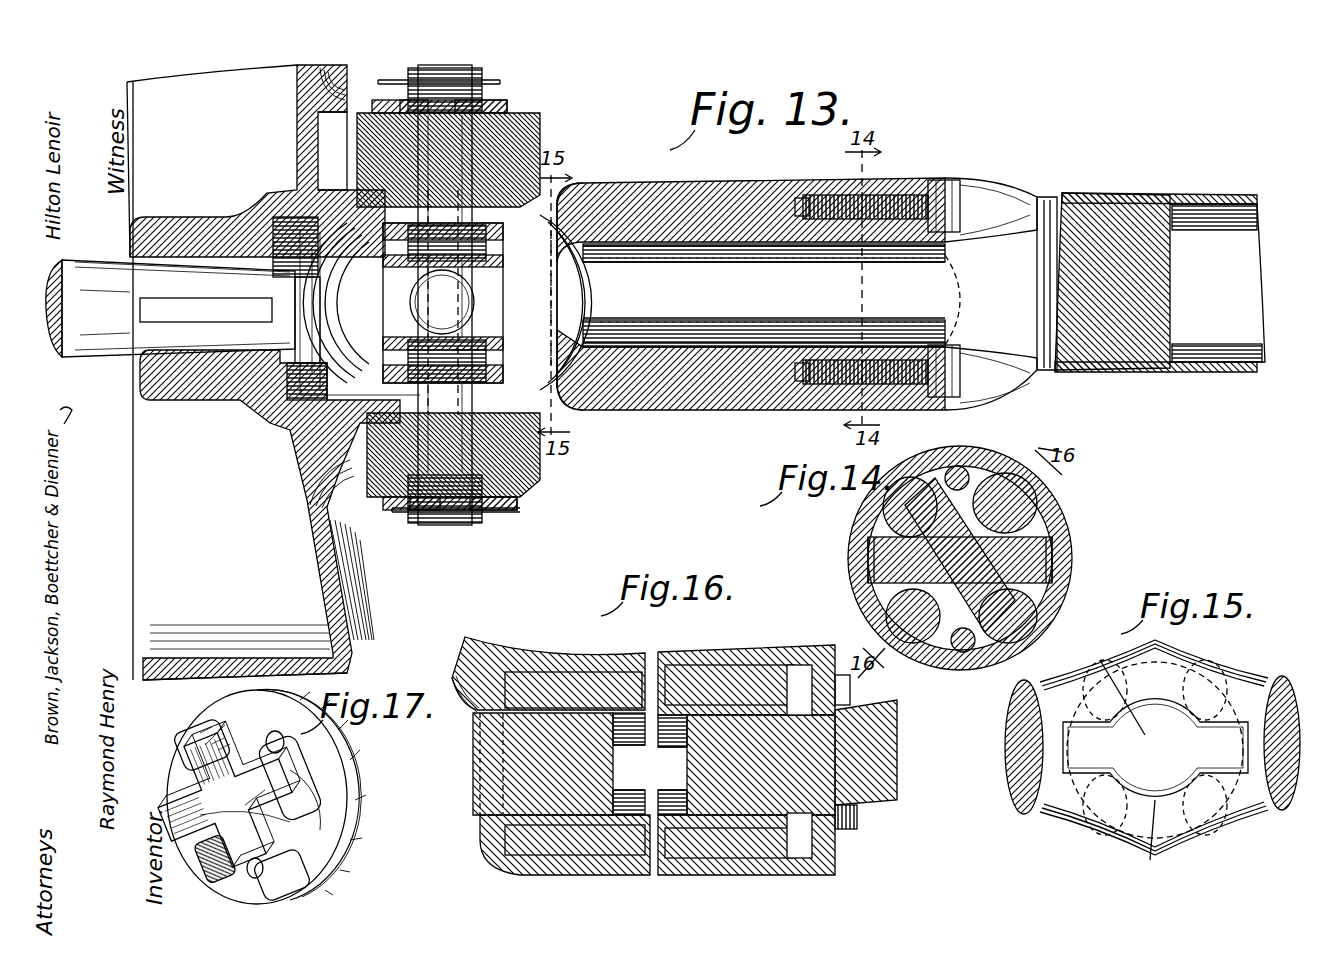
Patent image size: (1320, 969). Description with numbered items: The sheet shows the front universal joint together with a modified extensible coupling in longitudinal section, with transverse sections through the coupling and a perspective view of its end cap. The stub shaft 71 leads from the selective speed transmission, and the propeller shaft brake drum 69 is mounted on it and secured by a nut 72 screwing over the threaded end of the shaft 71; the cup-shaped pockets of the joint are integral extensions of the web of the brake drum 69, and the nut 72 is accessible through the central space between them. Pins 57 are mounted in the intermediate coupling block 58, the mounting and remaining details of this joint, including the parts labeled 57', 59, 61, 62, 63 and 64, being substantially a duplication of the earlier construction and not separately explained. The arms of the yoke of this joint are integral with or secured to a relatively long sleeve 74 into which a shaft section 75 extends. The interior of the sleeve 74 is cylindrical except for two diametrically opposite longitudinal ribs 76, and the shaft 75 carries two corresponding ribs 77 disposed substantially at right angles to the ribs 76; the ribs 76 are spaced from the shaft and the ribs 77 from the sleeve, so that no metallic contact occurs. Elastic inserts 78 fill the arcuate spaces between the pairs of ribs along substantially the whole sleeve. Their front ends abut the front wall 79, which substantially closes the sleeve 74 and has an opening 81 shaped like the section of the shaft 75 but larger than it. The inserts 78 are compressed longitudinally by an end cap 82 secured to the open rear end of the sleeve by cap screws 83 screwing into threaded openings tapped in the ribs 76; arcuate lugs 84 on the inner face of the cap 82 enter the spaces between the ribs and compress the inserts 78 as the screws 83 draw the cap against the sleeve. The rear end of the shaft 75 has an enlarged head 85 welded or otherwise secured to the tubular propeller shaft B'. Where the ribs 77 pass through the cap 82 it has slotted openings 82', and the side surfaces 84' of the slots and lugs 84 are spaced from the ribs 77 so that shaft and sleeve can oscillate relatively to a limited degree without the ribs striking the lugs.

In FIG. 13, the pins 57 is at (502, 295).
In FIG. 13, the stud bolt portion 57' is at (438, 331).
In FIG. 13, the intermediate coupling block 58 is at (500, 300).
In FIG. 13, the split nuts 59 is at (458, 303).
In FIG. 13, the spherical housing 61 is at (447, 306).
In FIG. 13, the clamp block 62 is at (520, 128).
In FIG. 13, the washer 63 is at (490, 105).
In FIG. 13, the cotter pin 64 is at (490, 80).
In FIG. 13, the propeller shaft brake drum 69 is at (362, 640).
In FIG. 13, the stub shaft 71 is at (52, 325).
In FIG. 13, the nut 72 is at (292, 283).
In FIG. 13, the sleeve 74 is at (700, 240).
In FIG. 14, the sleeve 74 is at (1065, 530).
In FIG. 16, the sleeve 74 is at (700, 710).
In FIG. 15, the sleeve 74 is at (1135, 845).
In FIG. 13, the shaft section 75 is at (720, 258).
In FIG. 14, the shaft section 75 is at (1045, 510).
In FIG. 16, the shaft section 75 is at (715, 740).
In FIG. 15, the shaft section 75 is at (1125, 775).
In FIG. 14, the ribs 76 is at (956, 564).
In FIG. 16, the ribs 76 is at (665, 720).
In FIG. 13, the ribs or flanges 77 is at (715, 330).
In FIG. 14, the ribs or flanges 77 is at (868, 565).
In FIG. 14, the elastic inserts 78 is at (890, 498).
In FIG. 16, the elastic inserts 78 is at (570, 690).
In FIG. 13, the front wall 79 is at (575, 405).
In FIG. 16, the front wall 79 is at (490, 840).
In FIG. 15, the front wall 79 is at (1200, 690).
In FIG. 16, the opening 81 is at (478, 820).
In FIG. 15, the opening 81 is at (1142, 751).
In FIG. 13, the end cap 82 is at (885, 257).
In FIG. 16, the end cap 82 is at (872, 822).
In FIG. 17, the end cap 82 is at (298, 796).
In FIG. 17, the slotted openings 82' is at (275, 793).
In FIG. 13, the cap screws 83 is at (960, 180).
In FIG. 14, the cap screws 83 is at (957, 466).
In FIG. 16, the cap screws 83 is at (852, 690).
In FIG. 16, the arcuate lugs 84 is at (842, 745).
In FIG. 17, the arcuate lugs 84 is at (274, 803).
In FIG. 17, the side surfaces 84' is at (315, 804).
In FIG. 13, the enlarged head portion 85 is at (1095, 230).
In FIG. 16, the enlarged head portion 85 is at (900, 790).
In FIG. 13, the tubular propeller shaft B' is at (1217, 259).